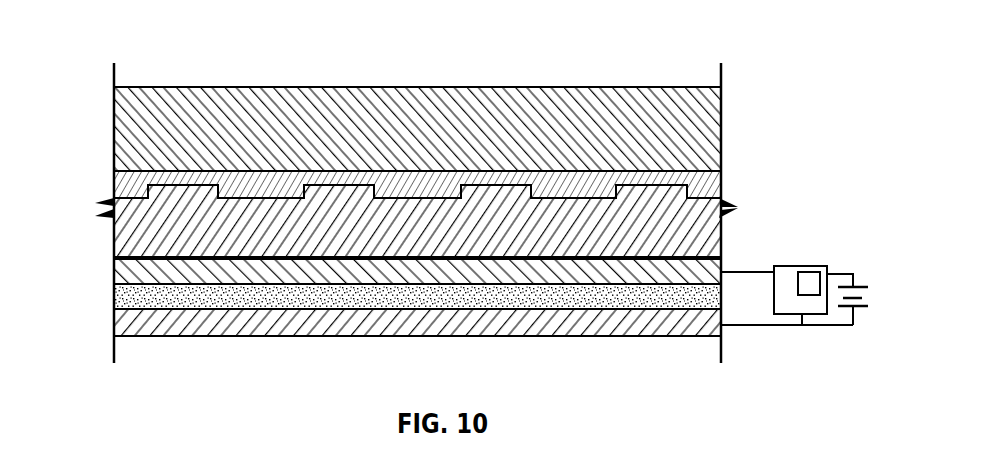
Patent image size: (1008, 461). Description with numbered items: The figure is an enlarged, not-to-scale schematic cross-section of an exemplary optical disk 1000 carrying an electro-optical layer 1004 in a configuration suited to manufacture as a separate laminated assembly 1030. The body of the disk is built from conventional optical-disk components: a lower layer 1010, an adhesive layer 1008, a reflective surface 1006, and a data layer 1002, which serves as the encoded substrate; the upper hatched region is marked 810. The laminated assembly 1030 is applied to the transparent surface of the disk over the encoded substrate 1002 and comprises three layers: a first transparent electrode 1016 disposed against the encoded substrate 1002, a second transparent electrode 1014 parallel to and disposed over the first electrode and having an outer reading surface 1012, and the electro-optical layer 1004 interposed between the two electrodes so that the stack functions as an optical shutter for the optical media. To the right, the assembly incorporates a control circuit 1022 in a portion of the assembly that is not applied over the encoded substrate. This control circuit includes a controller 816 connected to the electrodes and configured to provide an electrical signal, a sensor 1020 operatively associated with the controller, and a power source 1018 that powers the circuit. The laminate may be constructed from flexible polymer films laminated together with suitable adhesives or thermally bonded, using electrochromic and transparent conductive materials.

The disk 1000 is at (128, 32).
The substrate 810 is at (380, 105).
The lower layer 1010 is at (126, 100).
The adhesive layer 1008 is at (123, 190).
The reflective surface 1006 is at (97, 208).
The data layer 1002 is at (127, 252).
The laminated assembly 1030 is at (427, 297).
The first transparent electrode 1016 is at (132, 263).
The electro-optical layer 1004 is at (293, 287).
The second transparent electrode 1014 is at (233, 327).
The outer reading surface 1012 is at (621, 338).
The controller 816 is at (819, 301).
The sensor 1020 is at (812, 272).
The power source 1018 is at (863, 318).
The control circuit 1022 is at (807, 337).